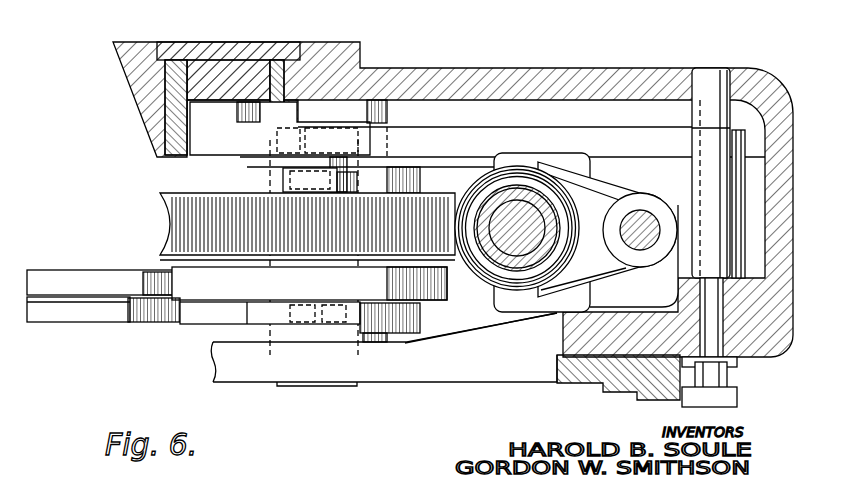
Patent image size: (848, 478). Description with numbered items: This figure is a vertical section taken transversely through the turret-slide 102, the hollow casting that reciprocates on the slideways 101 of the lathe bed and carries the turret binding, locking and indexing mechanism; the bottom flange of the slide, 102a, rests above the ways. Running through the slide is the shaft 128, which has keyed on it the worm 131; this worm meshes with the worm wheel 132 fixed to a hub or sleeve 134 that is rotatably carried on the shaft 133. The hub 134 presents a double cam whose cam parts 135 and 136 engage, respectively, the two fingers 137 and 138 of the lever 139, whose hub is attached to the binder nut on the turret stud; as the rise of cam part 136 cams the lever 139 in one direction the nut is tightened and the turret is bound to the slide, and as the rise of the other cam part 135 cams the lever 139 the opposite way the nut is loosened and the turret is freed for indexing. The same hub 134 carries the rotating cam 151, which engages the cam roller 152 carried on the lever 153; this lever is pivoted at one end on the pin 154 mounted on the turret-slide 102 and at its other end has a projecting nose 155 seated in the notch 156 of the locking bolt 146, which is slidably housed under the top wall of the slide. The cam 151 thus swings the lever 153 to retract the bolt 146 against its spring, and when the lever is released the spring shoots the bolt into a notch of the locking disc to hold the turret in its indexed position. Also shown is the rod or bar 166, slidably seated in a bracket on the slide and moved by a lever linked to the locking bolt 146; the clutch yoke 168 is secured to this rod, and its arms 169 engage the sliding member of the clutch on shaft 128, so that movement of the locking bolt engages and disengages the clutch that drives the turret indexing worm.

The slideways 101 is at (571, 384).
The turret-slide 102 is at (542, 74).
The housing flange 102a is at (453, 377).
The shaft 128 is at (502, 213).
The worm 131 is at (478, 273).
The worm wheel 132 is at (167, 236).
The shaft 133 is at (313, 384).
The hub or sleeve 134 is at (283, 318).
The cam part 135 is at (168, 314).
The cam part 136 is at (377, 321).
The finger 137 is at (157, 284).
The finger 138 is at (210, 318).
The lever 139 is at (28, 274).
The locking bolt 146 is at (218, 60).
The cam 151 is at (420, 153).
The cam roller 152 is at (282, 182).
The lever 153 is at (442, 128).
The pin 154 is at (710, 78).
The projecting nose 155 is at (222, 110).
The notch 156 is at (254, 100).
The rod or bar 166 is at (650, 248).
The clutch yoke 168 is at (640, 194).
The arms 169 is at (592, 177).